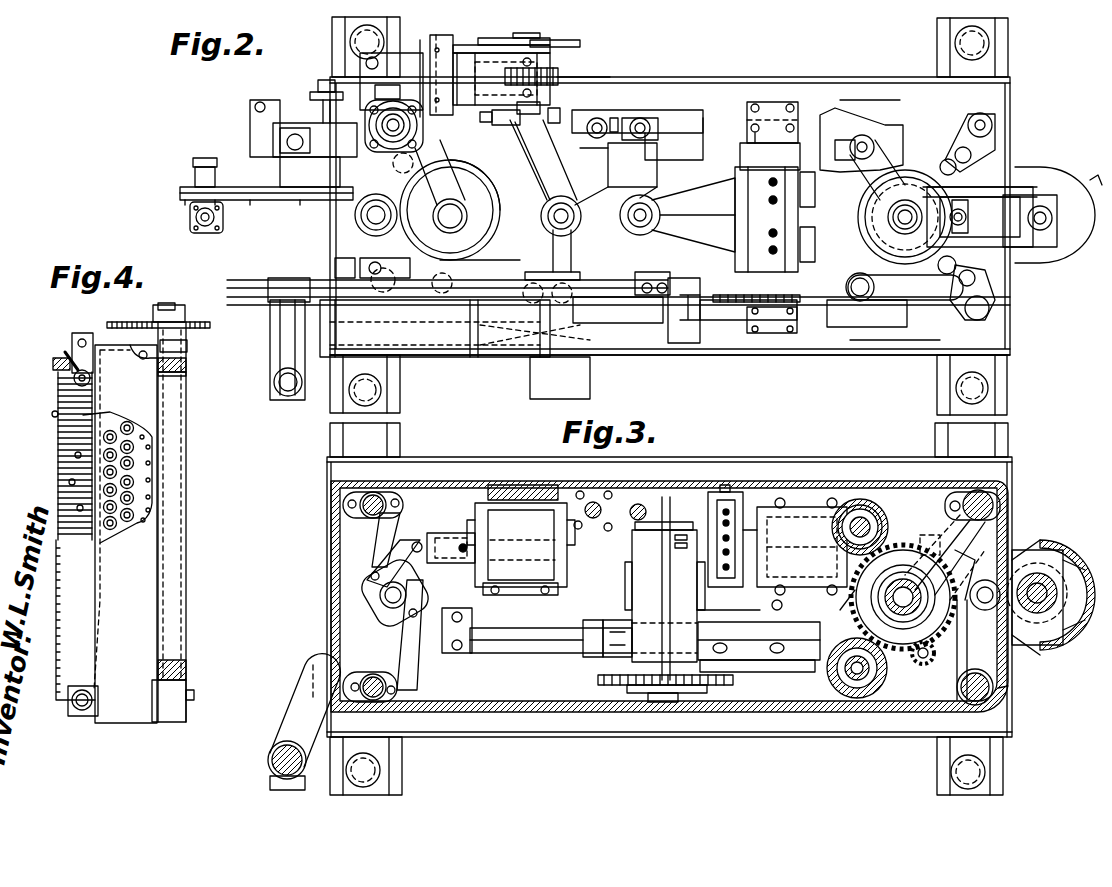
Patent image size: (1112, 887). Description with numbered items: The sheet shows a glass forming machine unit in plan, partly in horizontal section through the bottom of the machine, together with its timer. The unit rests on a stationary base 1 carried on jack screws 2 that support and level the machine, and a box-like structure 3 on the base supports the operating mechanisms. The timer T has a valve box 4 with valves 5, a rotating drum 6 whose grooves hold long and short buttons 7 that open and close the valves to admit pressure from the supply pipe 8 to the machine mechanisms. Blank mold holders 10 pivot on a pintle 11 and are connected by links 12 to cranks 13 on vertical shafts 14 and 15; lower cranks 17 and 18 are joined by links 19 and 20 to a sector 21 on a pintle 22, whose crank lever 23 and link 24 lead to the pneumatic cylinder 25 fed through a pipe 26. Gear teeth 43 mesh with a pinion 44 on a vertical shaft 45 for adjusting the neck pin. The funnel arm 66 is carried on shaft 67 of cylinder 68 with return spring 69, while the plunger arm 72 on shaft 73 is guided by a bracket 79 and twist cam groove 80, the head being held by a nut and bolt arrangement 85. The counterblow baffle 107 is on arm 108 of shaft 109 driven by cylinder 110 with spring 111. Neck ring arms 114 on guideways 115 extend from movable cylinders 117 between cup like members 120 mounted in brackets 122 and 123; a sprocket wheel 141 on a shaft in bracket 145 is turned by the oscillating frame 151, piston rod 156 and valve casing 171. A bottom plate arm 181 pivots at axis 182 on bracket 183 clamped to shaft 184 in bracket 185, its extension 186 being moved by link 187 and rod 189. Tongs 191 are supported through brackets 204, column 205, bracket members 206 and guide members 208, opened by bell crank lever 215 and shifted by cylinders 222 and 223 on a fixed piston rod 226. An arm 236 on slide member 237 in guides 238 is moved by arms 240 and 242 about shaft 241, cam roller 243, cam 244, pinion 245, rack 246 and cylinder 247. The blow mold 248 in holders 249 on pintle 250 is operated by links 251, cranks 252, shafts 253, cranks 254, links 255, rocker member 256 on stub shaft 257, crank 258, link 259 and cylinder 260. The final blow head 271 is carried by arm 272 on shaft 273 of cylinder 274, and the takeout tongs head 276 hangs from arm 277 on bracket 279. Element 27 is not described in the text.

In FIG. 2, the stationary base 1 is at (870, 355).
In FIG. 3, the stationary base 1 is at (1000, 735).
In FIG. 2, the jack screws 2 is at (955, 42).
In FIG. 3, the jack screws 2 is at (380, 770).
In FIG. 2, the box-like structure 3 is at (1000, 350).
In FIG. 3, the box-like structure 3 is at (332, 565).
In FIG. 4, the valve box 4 is at (105, 425).
In FIG. 4, the valves 5 is at (127, 482).
In FIG. 4, the rotating drum 6 is at (72, 527).
In FIG. 4, the long and short buttons 7 is at (55, 413).
In FIG. 4, the pipe 8 is at (82, 712).
In FIG. 4, the timer T is at (150, 548).
In FIG. 2, the mold holders 10 is at (900, 170).
In FIG. 2, the pintle 11 is at (1000, 185).
In FIG. 2, the links 12 is at (950, 165).
In FIG. 2, the cranks 13 is at (1000, 148).
In FIG. 2, the vertical shaft 14 is at (995, 118).
In FIG. 3, the vertical shaft 14 is at (995, 495).
In FIG. 2, the vertical shaft 15 is at (985, 310).
In FIG. 3, the vertical shaft 15 is at (1000, 690).
In FIG. 3, the crank 17 is at (998, 510).
In FIG. 3, the crank 18 is at (958, 688).
In FIG. 3, the link 19 is at (1000, 540).
In FIG. 3, the link 20 is at (958, 656).
In FIG. 3, the sector 21 is at (983, 612).
In FIG. 3, the pintle 22 is at (1040, 580).
In FIG. 3, the crank lever 23 is at (1040, 545).
In FIG. 3, the link 24 is at (950, 545).
In FIG. 3, the pneumatic cylinder 25 is at (800, 510).
In FIG. 3, the pipe 26 is at (750, 500).
In FIG. 2, the roller 27 is at (648, 222).
In FIG. 3, the gear teeth 43 is at (860, 622).
In FIG. 3, the pinion 44 is at (930, 661).
In FIG. 3, the vertical shaft 45 is at (960, 630).
In FIG. 2, the arm 66 is at (880, 135).
In FIG. 2, the vertical shaft 67 is at (863, 130).
In FIG. 3, the vertical shaft 67 is at (865, 510).
In FIG. 3, the pneumatic cylinder 68 is at (858, 500).
In FIG. 3, the spring 69 is at (888, 513).
In FIG. 2, the arm 72 is at (1010, 265).
In FIG. 2, the vertical shaft 73 is at (1045, 205).
In FIG. 3, the vertical shaft 73 is at (1040, 635).
In FIG. 3, the bracket 79 is at (1080, 562).
In FIG. 3, the groove 80 is at (1085, 625).
In FIG. 2, the nut and bolt arrangement 85 is at (950, 172).
In FIG. 2, the counterblow baffle 107 is at (1000, 345).
In FIG. 2, the arm 108 is at (890, 302).
In FIG. 2, the vertical shaft 109 is at (858, 300).
In FIG. 3, the vertical shaft 109 is at (835, 695).
In FIG. 3, the pneumatic cylinder 110 is at (828, 680).
In FIG. 3, the compression spring 111 is at (862, 700).
In FIG. 2, the arms 114 is at (725, 219).
In FIG. 2, the guideways 115 is at (735, 214).
In FIG. 2, the movable pneumatic cylinders 117 is at (745, 155).
In FIG. 2, the cup like members 120 is at (752, 140).
In FIG. 2, the bracket 122 is at (725, 325).
In FIG. 2, the bracket 123 is at (760, 102).
In FIG. 3, the sprocket wheel 141 is at (598, 680).
In FIG. 3, the bracket 145 is at (650, 625).
In FIG. 3, the oscillating frame 151 is at (750, 655).
In FIG. 3, the piston rod 156 is at (500, 645).
In FIG. 3, the valve casing 171 is at (710, 500).
In FIG. 2, the arm 181 is at (630, 175).
In FIG. 2, the horizontal axis 182 is at (665, 145).
In FIG. 2, the bracket 183 is at (650, 118).
In FIG. 2, the vertical shaft 184 is at (640, 110).
In FIG. 3, the vertical shaft 184 is at (640, 500).
In FIG. 3, the bracket 185 is at (605, 497).
In FIG. 2, the extension 186 is at (612, 150).
In FIG. 2, the link 187 is at (620, 110).
In FIG. 2, the rod 189 is at (598, 118).
In FIG. 3, the rod 189 is at (596, 520).
In FIG. 2, the tongs 191 is at (570, 210).
In FIG. 2, the brackets 204 is at (268, 360).
In FIG. 2, the stationary column 205 is at (280, 385).
In FIG. 3, the stationary column 205 is at (272, 757).
In FIG. 3, the bracket members 206 is at (318, 690).
In FIG. 2, the guide members 208 is at (690, 330).
In FIG. 2, the bell crank lever 215 is at (505, 328).
In FIG. 2, the fluid pressure cylinder 222 is at (410, 340).
In FIG. 2, the fluid pressure cylinder 223 is at (512, 350).
In FIG. 2, the fixed piston rod 226 is at (605, 330).
In FIG. 2, the arm 236 is at (515, 130).
In FIG. 2, the slide member 237 is at (492, 125).
In FIG. 3, the slide member 237 is at (520, 490).
In FIG. 2, the vertical guides 238 is at (580, 110).
In FIG. 2, the arm 240 is at (540, 108).
In FIG. 2, the shaft 241 is at (438, 40).
In FIG. 2, the second arm 242 is at (470, 45).
In FIG. 2, the cam roller 243 is at (545, 40).
In FIG. 2, the cam 244 is at (565, 40).
In FIG. 2, the pinion 245 is at (545, 68).
In FIG. 2, the rack 246 is at (565, 70).
In FIG. 2, the pneumatic cylinder 247 is at (395, 80).
In FIG. 2, the blow mold 248 is at (480, 200).
In FIG. 2, the holders 249 is at (470, 225).
In FIG. 2, the pintle 250 is at (355, 214).
In FIG. 2, the links 251 is at (350, 170).
In FIG. 2, the cranks 252 is at (312, 142).
In FIG. 3, the shafts 253 is at (345, 505).
In FIG. 3, the cranks 254 is at (402, 510).
In FIG. 3, the links 255 is at (382, 535).
In FIG. 3, the rocker member 256 is at (368, 590).
In FIG. 3, the stub shaft 257 is at (412, 585).
In FIG. 3, the crank 258 is at (410, 570).
In FIG. 3, the link 259 is at (430, 540).
In FIG. 3, the pneumatic cylinder 260 is at (512, 590).
In FIG. 2, the final blow head 271 is at (470, 250).
In FIG. 2, the arm 272 is at (418, 182).
In FIG. 2, the vertical shaft 273 is at (370, 125).
In FIG. 2, the pneumatic cylinder 274 is at (320, 92).
In FIG. 2, the tongs operating head 276 is at (188, 212).
In FIG. 2, the arm 277 is at (233, 195).
In FIG. 2, the bracket 279 is at (275, 112).